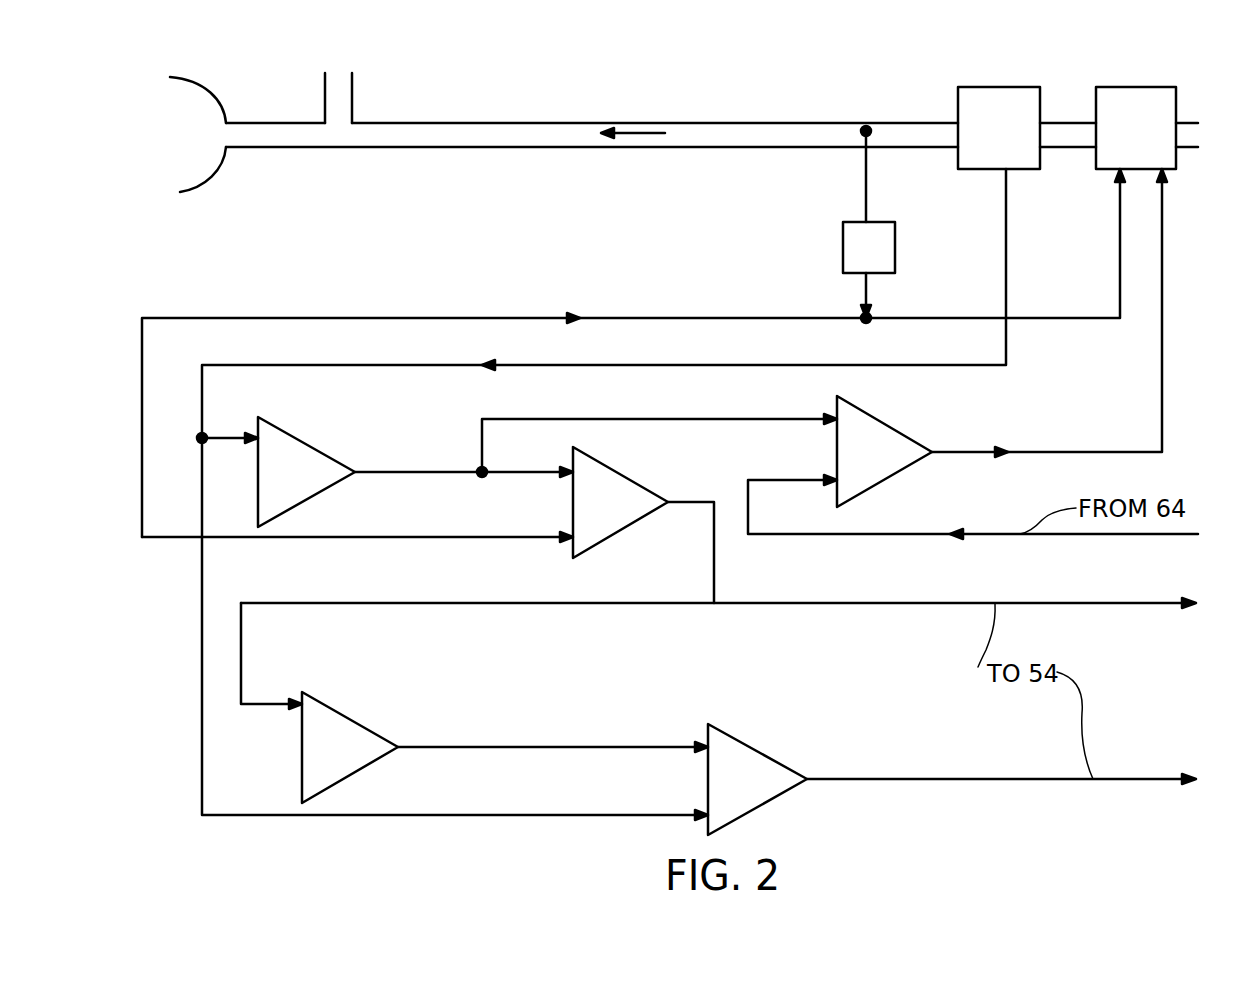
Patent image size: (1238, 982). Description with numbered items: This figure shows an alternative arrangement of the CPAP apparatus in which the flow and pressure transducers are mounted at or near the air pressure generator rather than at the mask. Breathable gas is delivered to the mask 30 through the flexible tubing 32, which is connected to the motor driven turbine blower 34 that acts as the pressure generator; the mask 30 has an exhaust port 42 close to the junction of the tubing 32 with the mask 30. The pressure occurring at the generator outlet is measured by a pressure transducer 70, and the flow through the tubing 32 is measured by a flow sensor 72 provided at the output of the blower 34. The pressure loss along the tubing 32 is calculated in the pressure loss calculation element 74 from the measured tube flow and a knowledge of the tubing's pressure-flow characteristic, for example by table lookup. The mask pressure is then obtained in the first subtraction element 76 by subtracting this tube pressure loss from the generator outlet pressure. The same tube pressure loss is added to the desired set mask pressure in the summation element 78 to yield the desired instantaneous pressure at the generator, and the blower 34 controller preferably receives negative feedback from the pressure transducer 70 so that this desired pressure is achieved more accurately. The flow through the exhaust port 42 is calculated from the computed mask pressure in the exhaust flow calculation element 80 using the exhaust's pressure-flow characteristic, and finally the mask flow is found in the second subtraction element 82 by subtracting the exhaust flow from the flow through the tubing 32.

The mask 30 is at (193, 106).
The flexible tubing 32 is at (562, 138).
The exhaust port 42 is at (343, 106).
The pressure transducer 70 is at (843, 258).
The flow sensor 72 is at (980, 148).
The turbine blower 34 is at (1095, 158).
The pressure loss calculation element 74 is at (287, 427).
The first subtraction element 76 is at (607, 460).
The summation element 78 is at (872, 408).
The exhaust flow calculation element 80 is at (332, 703).
The second subtraction element 82 is at (755, 748).